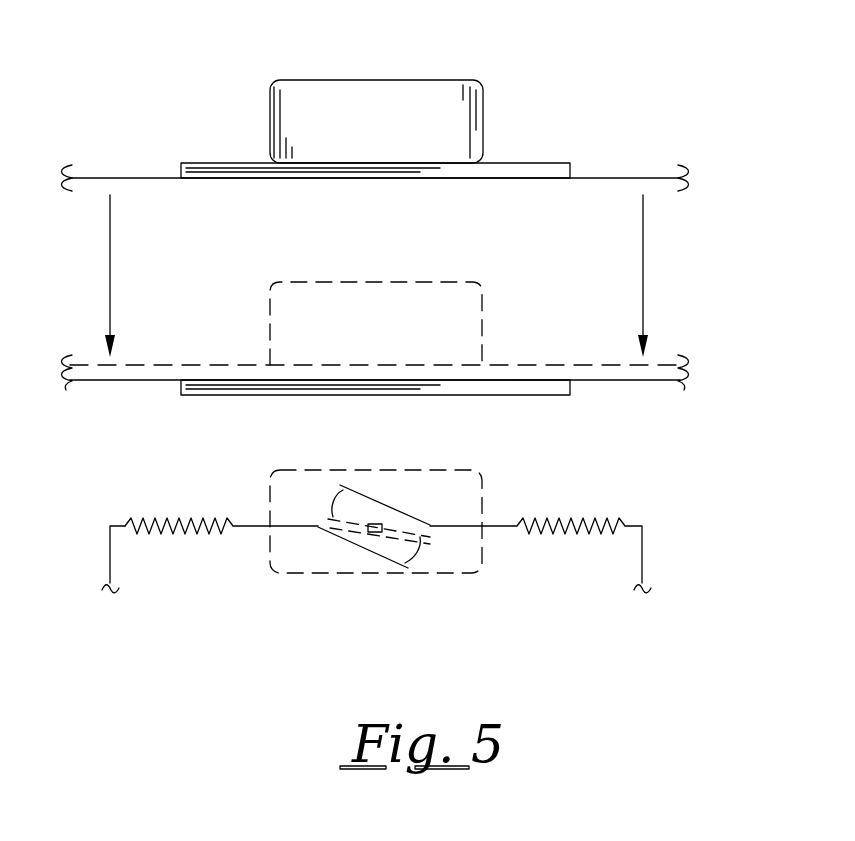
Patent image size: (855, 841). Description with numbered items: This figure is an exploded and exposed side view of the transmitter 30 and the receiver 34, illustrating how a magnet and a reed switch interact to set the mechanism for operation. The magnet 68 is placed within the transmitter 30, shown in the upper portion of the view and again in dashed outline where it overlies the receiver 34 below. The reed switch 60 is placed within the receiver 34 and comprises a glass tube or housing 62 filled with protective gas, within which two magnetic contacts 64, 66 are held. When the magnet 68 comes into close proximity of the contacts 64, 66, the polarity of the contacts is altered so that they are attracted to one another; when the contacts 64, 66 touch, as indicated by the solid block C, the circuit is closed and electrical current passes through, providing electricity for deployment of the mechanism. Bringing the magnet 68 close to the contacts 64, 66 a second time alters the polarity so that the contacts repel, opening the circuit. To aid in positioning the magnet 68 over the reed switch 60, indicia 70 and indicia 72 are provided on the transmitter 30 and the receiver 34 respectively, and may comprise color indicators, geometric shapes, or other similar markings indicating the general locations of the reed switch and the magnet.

The transmitter 30 is at (108, 180).
The receiver 34 is at (110, 382).
The reed switch 60 is at (556, 597).
The glass tube or housing 62 is at (268, 557).
The magnetic contact 64 is at (378, 555).
The magnetic contact 66 is at (366, 495).
The magnet 68 is at (400, 80).
The indicia 70 is at (538, 163).
The indicia 72 is at (520, 395).
The solid block C is at (368, 530).